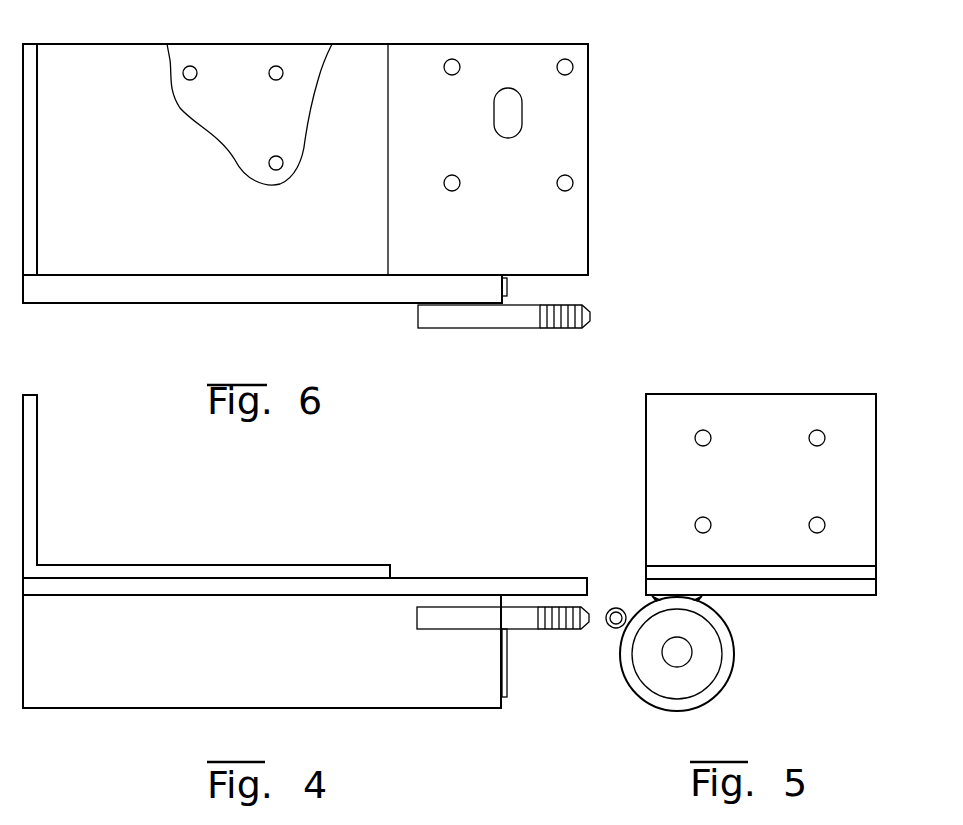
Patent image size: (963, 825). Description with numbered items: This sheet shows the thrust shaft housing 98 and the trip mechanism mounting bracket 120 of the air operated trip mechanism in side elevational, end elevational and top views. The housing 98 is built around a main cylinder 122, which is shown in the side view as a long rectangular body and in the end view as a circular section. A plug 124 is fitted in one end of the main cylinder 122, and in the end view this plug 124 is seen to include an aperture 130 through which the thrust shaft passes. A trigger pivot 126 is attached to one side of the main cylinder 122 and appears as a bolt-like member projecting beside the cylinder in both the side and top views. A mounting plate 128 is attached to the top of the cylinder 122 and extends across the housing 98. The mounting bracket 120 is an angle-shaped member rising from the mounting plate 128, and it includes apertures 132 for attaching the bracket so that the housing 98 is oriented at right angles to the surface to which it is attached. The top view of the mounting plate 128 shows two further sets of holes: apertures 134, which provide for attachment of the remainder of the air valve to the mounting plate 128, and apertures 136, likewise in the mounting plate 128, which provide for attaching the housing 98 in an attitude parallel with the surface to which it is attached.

In FIG. 6, the thrust shaft housing 98 is at (345, 318).
In FIG. 4, the thrust shaft housing 98 is at (143, 728).
In FIG. 5, the thrust shaft housing 98 is at (762, 671).
In FIG. 6, the trip mechanism mounting bracket 120 is at (85, 75).
In FIG. 4, the trip mechanism mounting bracket 120 is at (38, 440).
In FIG. 5, the trip mechanism mounting bracket 120 is at (780, 405).
In FIG. 6, the main cylinder 122 is at (222, 303).
In FIG. 4, the main cylinder 122 is at (262, 661).
In FIG. 5, the main cylinder 122 is at (733, 638).
In FIG. 6, the plug 124 is at (508, 286).
In FIG. 4, the plug 124 is at (507, 683).
In FIG. 5, the plug 124 is at (652, 668).
In FIG. 6, the trigger pivot 126 is at (462, 329).
In FIG. 4, the trigger pivot 126 is at (530, 630).
In FIG. 5, the trigger pivot 126 is at (611, 626).
In FIG. 6, the mounting plate 128 is at (252, 125).
In FIG. 4, the mounting plate 128 is at (645, 587).
In FIG. 5, the mounting plate 128 is at (761, 580).
In FIG. 5, the aperture 130 is at (680, 660).
In FIG. 5, the apertures 132 is at (817, 517).
In FIG. 6, the apertures 134 is at (461, 182).
In FIG. 6, the apertures 136 is at (278, 156).